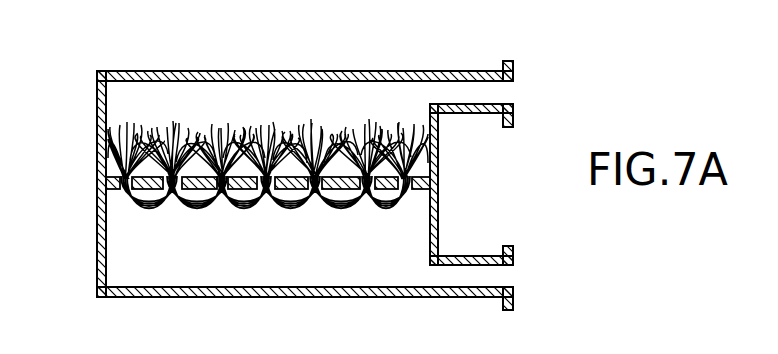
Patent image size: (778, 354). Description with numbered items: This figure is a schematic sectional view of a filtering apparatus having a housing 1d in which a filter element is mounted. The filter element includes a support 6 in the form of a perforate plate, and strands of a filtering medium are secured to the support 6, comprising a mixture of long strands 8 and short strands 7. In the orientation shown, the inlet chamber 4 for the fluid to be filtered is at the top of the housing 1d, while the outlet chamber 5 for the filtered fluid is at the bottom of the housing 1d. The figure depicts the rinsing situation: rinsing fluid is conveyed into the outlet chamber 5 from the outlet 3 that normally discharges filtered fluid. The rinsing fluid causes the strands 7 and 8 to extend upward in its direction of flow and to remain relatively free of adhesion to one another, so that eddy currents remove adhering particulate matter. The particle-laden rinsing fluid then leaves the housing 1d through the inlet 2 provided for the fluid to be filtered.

The housing 1d is at (98, 205).
The inlet 2 is at (478, 72).
The outlet 3 is at (483, 297).
The inlet chamber 4 is at (208, 97).
The outlet chamber 5 is at (141, 270).
The support 6 is at (413, 185).
The short strands 7 is at (125, 151).
The long strands 8 is at (305, 132).